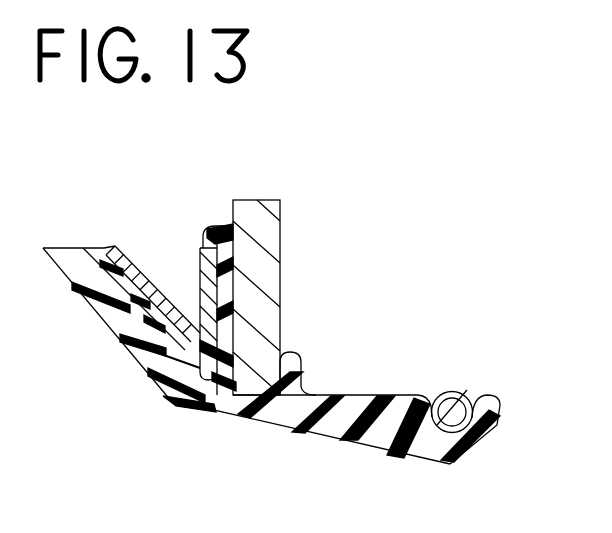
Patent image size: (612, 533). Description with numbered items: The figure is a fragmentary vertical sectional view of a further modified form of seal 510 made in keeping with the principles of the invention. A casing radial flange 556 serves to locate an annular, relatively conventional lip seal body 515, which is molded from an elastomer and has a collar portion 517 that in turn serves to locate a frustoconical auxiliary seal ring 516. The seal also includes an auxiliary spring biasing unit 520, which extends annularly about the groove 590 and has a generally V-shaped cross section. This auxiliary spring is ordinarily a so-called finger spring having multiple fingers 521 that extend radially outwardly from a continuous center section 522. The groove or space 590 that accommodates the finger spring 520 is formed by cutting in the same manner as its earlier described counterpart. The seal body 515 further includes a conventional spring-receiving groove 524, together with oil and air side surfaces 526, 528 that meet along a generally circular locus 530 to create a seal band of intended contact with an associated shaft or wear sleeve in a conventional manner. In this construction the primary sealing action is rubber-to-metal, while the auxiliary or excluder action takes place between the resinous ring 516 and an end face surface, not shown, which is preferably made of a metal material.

The seal 510 is at (352, 208).
The lip seal body 515 is at (393, 427).
The frustoconical auxiliary seal ring 516 is at (122, 323).
The collar portion 517 is at (231, 394).
The auxiliary spring biasing unit 520 is at (121, 256).
The fingers 521 is at (146, 268).
The center section 522 is at (190, 363).
The spring-receiving groove 524 is at (473, 376).
The oil side surface 526 is at (480, 445).
The air side surface 528 is at (328, 437).
The circular locus 530 is at (452, 466).
The casing radial flange 556 is at (263, 273).
The groove 590 is at (166, 263).